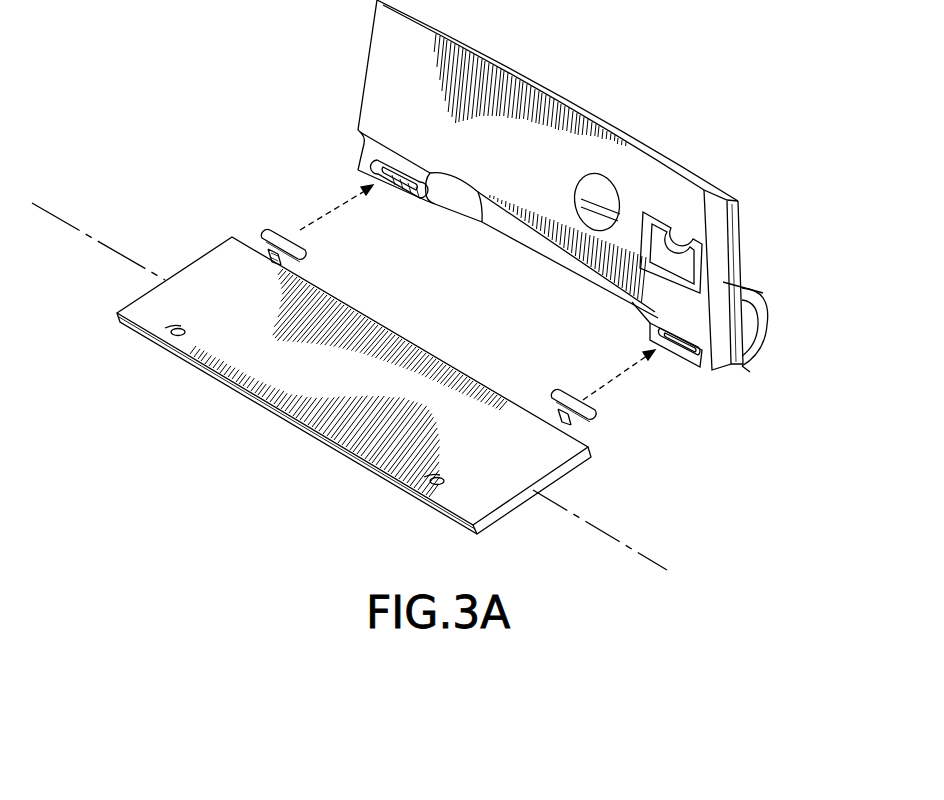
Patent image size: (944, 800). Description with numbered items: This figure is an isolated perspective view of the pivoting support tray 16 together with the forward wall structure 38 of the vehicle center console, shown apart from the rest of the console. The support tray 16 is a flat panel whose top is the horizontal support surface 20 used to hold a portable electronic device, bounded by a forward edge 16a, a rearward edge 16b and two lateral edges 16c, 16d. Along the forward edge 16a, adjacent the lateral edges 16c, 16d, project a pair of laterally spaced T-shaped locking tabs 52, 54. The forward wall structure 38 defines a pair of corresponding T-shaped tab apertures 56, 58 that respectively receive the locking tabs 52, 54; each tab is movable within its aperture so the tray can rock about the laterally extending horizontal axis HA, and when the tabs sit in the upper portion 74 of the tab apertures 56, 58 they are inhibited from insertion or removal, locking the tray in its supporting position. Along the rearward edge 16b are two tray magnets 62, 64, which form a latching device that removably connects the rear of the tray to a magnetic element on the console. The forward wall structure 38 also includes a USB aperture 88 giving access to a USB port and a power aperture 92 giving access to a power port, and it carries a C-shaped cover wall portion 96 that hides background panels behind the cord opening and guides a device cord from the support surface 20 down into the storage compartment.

The support tray 16 is at (357, 385).
The forward edge 16a is at (397, 333).
The rearward edge 16b is at (284, 420).
The lateral edge 16c is at (137, 293).
The lateral edge 16d is at (580, 462).
The horizontal support surface 20 is at (363, 392).
The forward wall structure 38 is at (748, 256).
The locking tab 52 is at (265, 222).
The locking tab 54 is at (612, 412).
The tab aperture 56 is at (405, 190).
The tab aperture 58 is at (697, 362).
The tray magnet 62 is at (155, 332).
The tray magnet 64 is at (394, 488).
The upper portion of tab aperture 74 is at (482, 222).
The USB aperture 88 is at (593, 185).
The power aperture 92 is at (685, 238).
The cover wall portion 96 is at (770, 318).
The horizontal axis HA is at (633, 548).